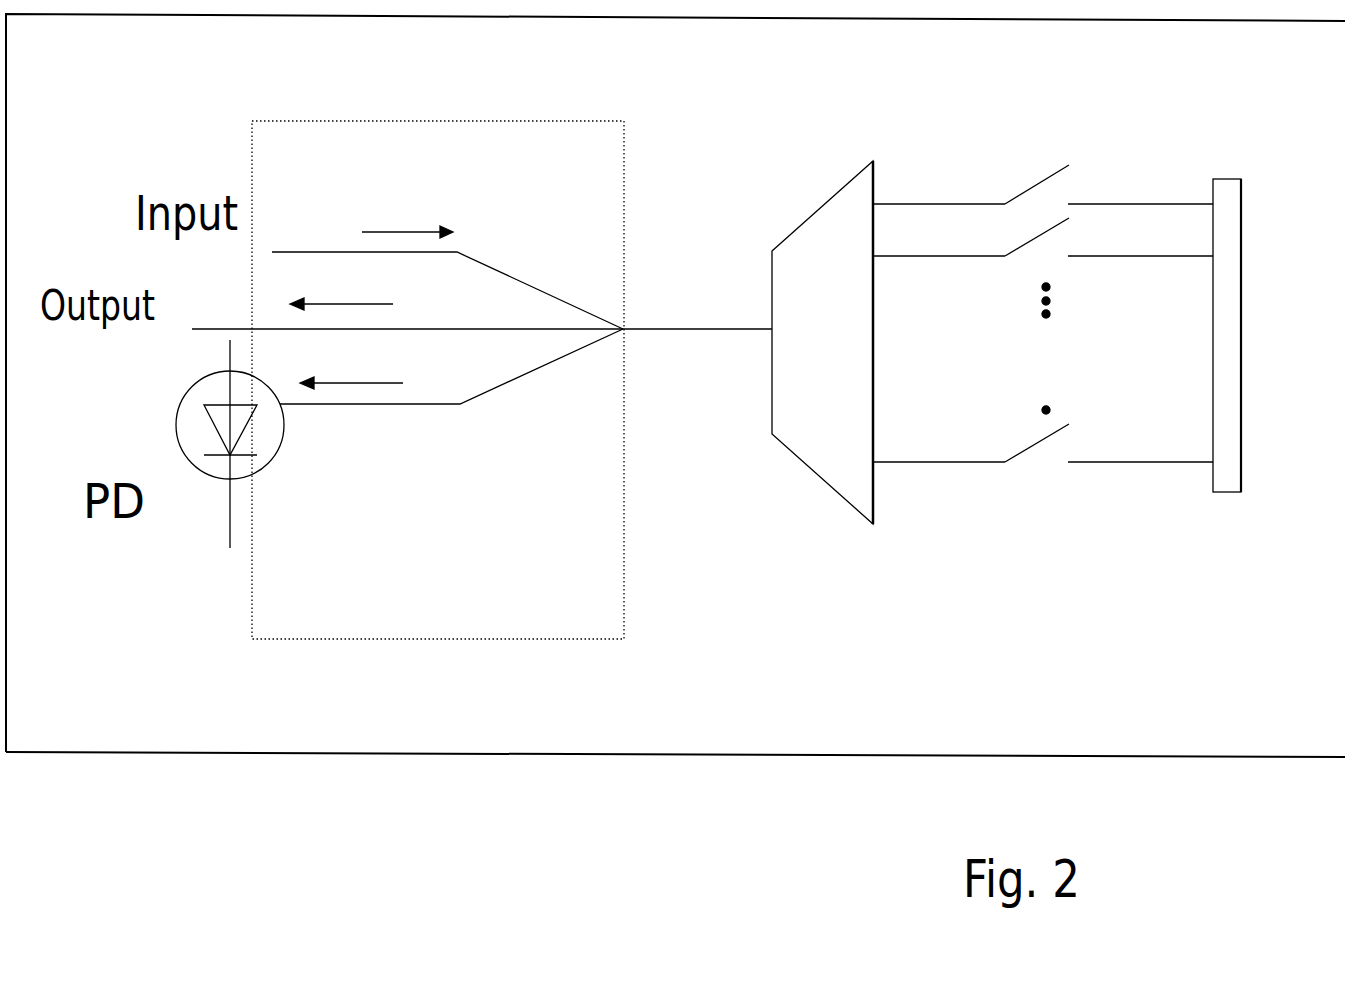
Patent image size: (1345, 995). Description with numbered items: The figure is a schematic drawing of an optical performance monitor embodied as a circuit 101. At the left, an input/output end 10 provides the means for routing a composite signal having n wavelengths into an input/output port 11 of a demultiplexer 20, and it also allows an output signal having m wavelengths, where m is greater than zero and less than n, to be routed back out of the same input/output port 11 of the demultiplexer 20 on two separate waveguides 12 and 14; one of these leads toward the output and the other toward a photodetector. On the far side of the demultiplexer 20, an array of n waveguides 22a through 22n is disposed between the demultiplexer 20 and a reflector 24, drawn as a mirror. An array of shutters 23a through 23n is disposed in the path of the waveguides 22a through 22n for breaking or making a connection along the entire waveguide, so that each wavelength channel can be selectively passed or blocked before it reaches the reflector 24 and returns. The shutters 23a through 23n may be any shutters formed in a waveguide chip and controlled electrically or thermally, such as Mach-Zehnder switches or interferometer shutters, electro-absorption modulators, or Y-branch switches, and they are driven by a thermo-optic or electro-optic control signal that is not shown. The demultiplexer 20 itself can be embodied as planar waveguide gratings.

The input/output end 10 is at (279, 124).
The input/output port 11 is at (761, 339).
The waveguide 12 is at (168, 327).
The waveguide 14 is at (437, 404).
The demultiplexer 20 is at (848, 508).
The waveguide 22a is at (1043, 173).
The waveguide 22n is at (1043, 495).
The shutter 23a is at (1044, 162).
The shutter 23n is at (1037, 459).
The reflector 24 is at (1237, 199).
The circuit 101 is at (678, 719).